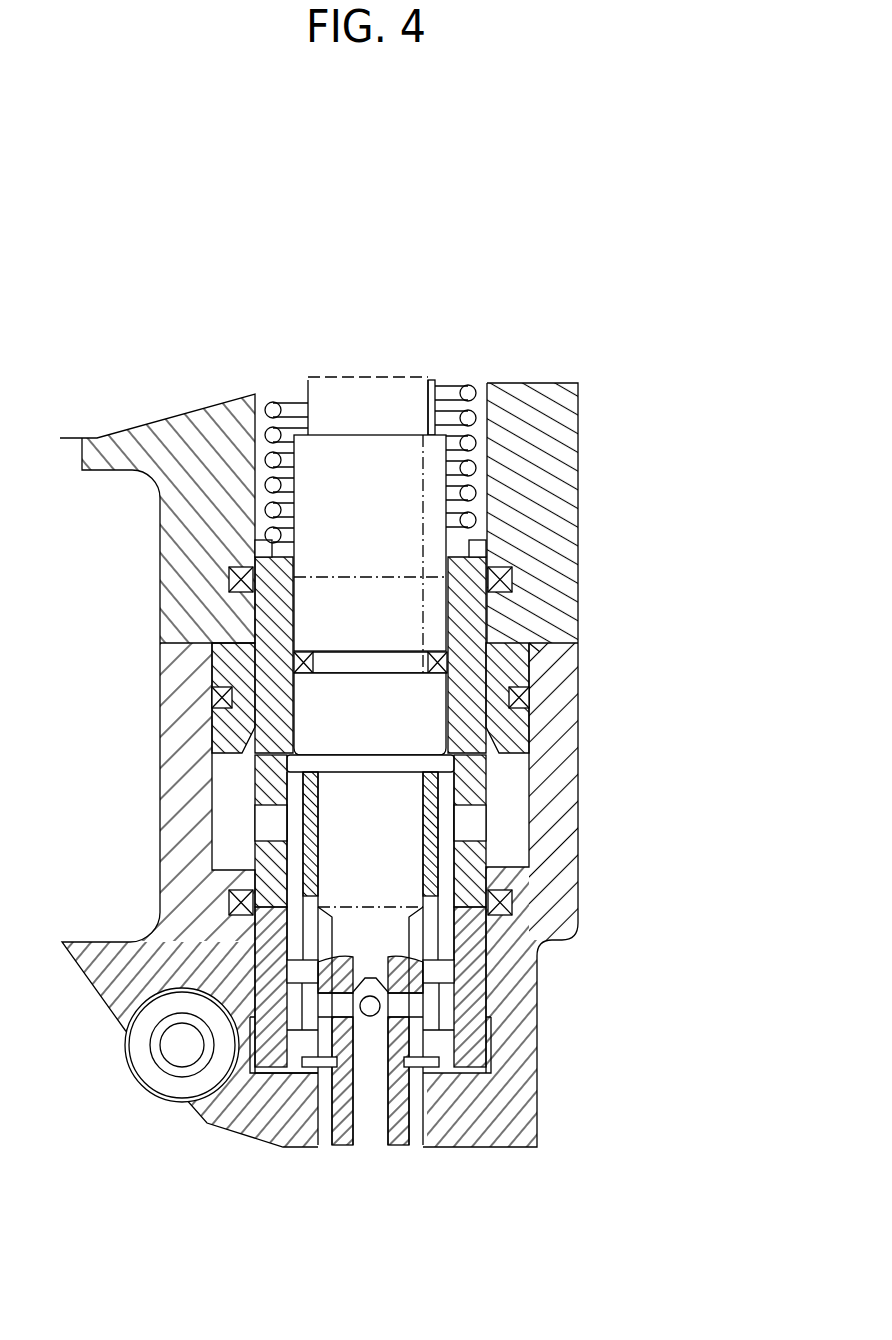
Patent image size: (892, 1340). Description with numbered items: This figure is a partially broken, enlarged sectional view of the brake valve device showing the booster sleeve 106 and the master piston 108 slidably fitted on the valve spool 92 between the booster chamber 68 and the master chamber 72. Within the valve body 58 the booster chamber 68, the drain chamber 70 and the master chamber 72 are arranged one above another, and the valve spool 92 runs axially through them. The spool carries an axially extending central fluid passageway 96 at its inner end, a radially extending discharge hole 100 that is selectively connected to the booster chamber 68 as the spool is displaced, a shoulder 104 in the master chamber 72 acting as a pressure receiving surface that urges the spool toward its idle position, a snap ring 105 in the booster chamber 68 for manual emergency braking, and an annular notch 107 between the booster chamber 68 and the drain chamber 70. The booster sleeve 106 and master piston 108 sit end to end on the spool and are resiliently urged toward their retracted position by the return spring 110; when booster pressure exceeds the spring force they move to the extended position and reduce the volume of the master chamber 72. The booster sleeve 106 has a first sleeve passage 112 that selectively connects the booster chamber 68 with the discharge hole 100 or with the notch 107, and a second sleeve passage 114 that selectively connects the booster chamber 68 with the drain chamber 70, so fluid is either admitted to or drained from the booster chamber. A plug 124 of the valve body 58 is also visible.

The valve body 58 is at (512, 580).
The booster chamber 68 is at (443, 1043).
The drain chamber 70 is at (237, 786).
The master chamber 72 is at (300, 393).
The valve spool 92 is at (423, 507).
The central fluid passageway 96 is at (376, 1118).
The radial discharge hole 100 is at (333, 1010).
The shoulder 104 is at (432, 412).
The snap ring 105 is at (437, 1062).
The booster sleeve 106 is at (268, 963).
The annular notch 107 is at (300, 870).
The master piston 108 is at (275, 618).
The return spring 110 is at (220, 400).
The first sleeve passage 112 is at (210, 1115).
The second sleeve passage 114 is at (256, 868).
The plug 124 is at (172, 1050).